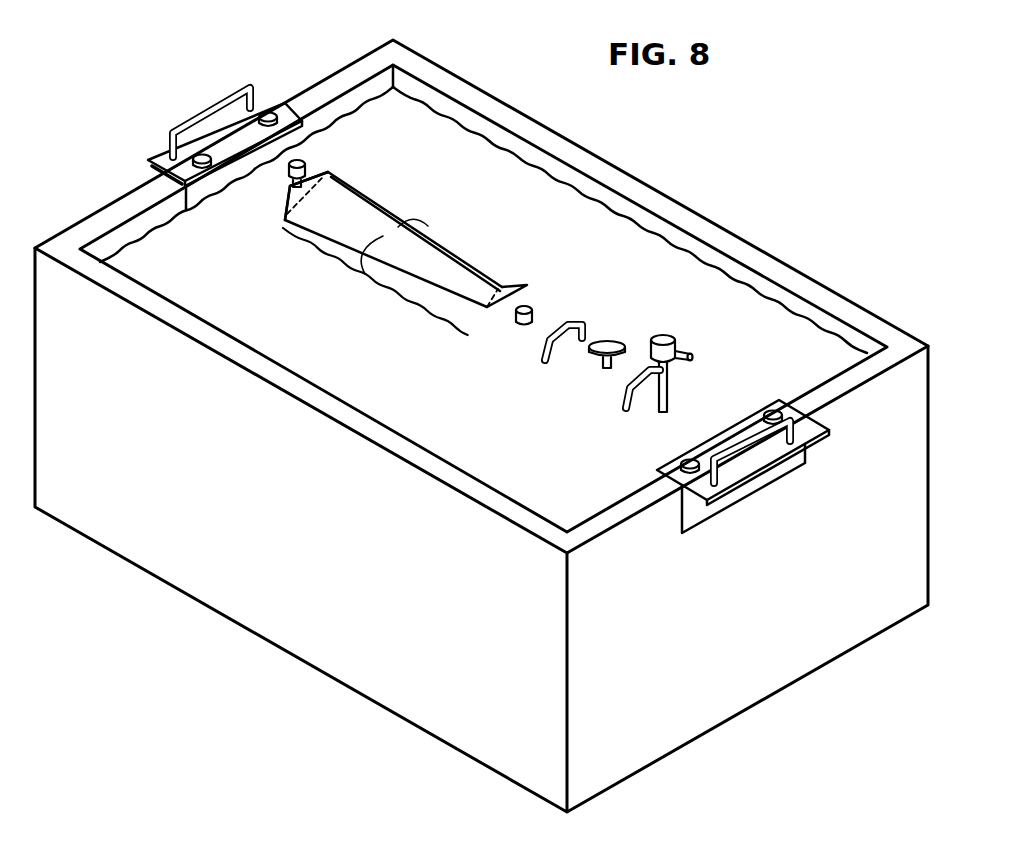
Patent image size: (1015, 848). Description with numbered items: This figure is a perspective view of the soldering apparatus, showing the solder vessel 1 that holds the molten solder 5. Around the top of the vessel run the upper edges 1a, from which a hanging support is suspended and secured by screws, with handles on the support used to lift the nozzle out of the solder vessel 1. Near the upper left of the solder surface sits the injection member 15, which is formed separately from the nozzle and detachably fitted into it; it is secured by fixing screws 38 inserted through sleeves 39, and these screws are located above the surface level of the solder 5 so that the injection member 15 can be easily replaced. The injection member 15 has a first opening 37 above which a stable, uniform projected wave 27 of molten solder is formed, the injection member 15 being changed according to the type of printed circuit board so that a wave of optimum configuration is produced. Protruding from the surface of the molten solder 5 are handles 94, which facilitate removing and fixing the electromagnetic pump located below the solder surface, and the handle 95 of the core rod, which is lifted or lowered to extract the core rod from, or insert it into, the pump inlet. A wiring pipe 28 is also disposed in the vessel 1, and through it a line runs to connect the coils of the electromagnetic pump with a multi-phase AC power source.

The solder vessel 1 is at (929, 463).
The upper edges of the solder vessel 1a is at (884, 363).
The molten solder 5 is at (798, 327).
The injection member 15 is at (527, 297).
The projected wave 27 is at (345, 180).
The wiring pipe 28 is at (670, 380).
The first opening 37 is at (457, 273).
The fixing screws 38 is at (287, 198).
The sleeves 39 is at (305, 162).
The handles 94 is at (568, 313).
The handle of the core rod 95 is at (612, 337).